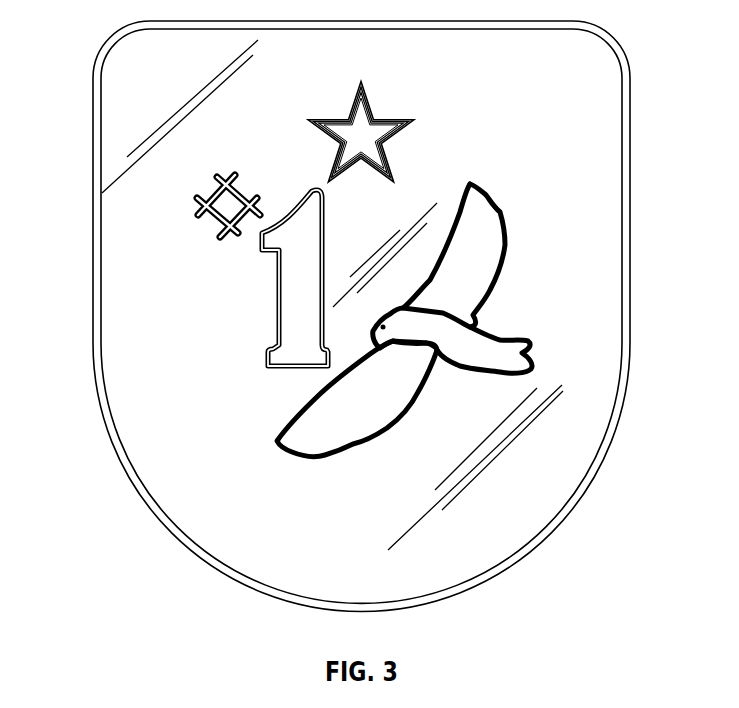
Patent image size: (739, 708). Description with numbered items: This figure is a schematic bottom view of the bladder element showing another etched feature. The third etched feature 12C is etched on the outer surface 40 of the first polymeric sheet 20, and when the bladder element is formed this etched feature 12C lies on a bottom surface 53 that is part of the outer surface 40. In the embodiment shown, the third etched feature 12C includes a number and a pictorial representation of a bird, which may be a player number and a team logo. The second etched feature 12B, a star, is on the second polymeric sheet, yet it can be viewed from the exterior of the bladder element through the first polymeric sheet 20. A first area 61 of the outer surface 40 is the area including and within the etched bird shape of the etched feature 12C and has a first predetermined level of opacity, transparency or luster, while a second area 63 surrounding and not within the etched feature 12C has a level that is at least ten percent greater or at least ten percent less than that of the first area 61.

The first polymeric sheet 20 is at (480, 562).
The second etched feature 12B is at (403, 140).
The third etched feature 12C is at (218, 237).
The outer surface 40 is at (226, 538).
The bottom surface 53 is at (254, 565).
The first area 61 is at (487, 263).
The second area 63 is at (430, 478).